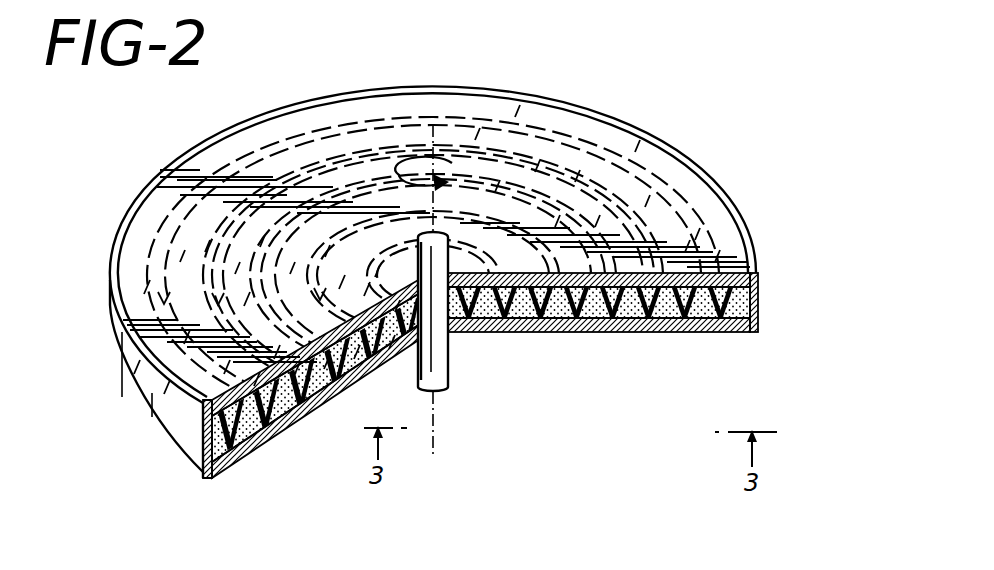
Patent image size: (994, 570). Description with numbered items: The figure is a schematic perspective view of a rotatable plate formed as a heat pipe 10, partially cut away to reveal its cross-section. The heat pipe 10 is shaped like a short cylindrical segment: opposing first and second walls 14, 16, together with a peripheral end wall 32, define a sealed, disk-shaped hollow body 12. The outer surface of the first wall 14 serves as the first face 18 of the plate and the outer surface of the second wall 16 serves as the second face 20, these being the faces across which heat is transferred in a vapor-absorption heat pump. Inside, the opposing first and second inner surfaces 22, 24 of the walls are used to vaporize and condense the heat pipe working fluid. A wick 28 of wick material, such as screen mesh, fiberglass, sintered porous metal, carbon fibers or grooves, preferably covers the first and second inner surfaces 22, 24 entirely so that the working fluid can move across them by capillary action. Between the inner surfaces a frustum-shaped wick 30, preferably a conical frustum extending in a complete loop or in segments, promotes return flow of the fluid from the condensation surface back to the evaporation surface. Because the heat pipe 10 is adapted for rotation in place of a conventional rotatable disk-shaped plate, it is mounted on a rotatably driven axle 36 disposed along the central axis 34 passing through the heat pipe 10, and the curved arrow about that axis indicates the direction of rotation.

The heat pipe 10 is at (724, 156).
The hollow body 12 is at (750, 301).
The first wall 14 is at (242, 452).
The second wall 16 is at (306, 426).
The first face 18 is at (165, 400).
The second face 20 is at (233, 467).
The first inner surface 22 is at (700, 332).
The second inner surface 24 is at (686, 322).
The wick 28 is at (523, 322).
The frustum-shaped wick 30 is at (658, 298).
The peripheral end wall 32 is at (183, 447).
The central axis 34 is at (434, 424).
The axle 36 is at (449, 363).